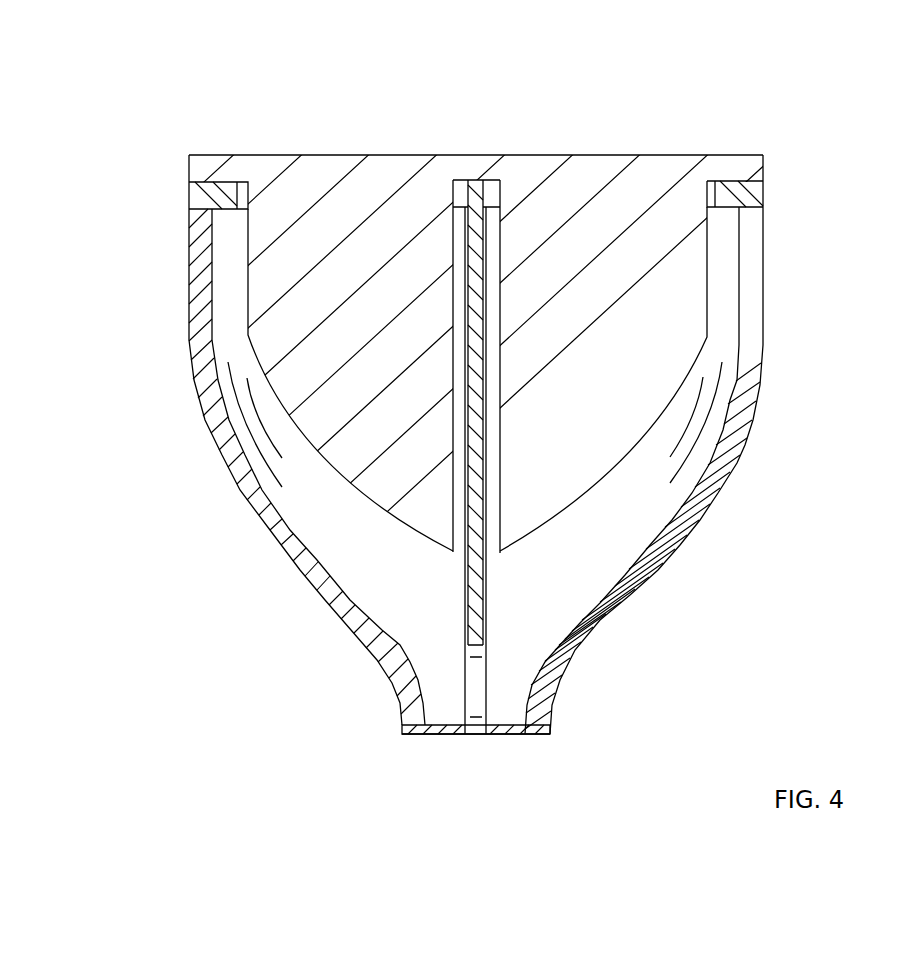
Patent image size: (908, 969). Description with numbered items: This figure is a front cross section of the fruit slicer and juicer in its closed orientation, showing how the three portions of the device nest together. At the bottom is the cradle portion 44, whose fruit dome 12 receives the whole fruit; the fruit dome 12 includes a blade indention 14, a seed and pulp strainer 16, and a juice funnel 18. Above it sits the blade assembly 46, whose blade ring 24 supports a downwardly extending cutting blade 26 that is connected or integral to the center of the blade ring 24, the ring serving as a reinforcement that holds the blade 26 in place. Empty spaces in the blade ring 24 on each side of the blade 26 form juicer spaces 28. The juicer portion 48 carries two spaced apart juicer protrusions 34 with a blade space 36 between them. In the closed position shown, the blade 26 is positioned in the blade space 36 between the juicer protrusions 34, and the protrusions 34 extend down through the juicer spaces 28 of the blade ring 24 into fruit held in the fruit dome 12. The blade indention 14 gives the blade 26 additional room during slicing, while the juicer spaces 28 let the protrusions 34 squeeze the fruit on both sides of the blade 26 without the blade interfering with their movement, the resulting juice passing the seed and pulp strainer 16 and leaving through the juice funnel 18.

The fruit dome 12 is at (580, 563).
The blade indention 14 is at (473, 683).
The seed and pulp strainer 16 is at (505, 728).
The juice funnel 18 is at (553, 703).
The blade ring 24 is at (213, 200).
The cutting blade 26 is at (468, 590).
The juicer spaces 28 is at (242, 205).
The juicer protrusions 34 is at (388, 504).
The blade space 36 is at (502, 300).
The cradle portion 44 is at (738, 455).
The blade assembly 46 is at (763, 192).
The juicer portion 48 is at (348, 153).